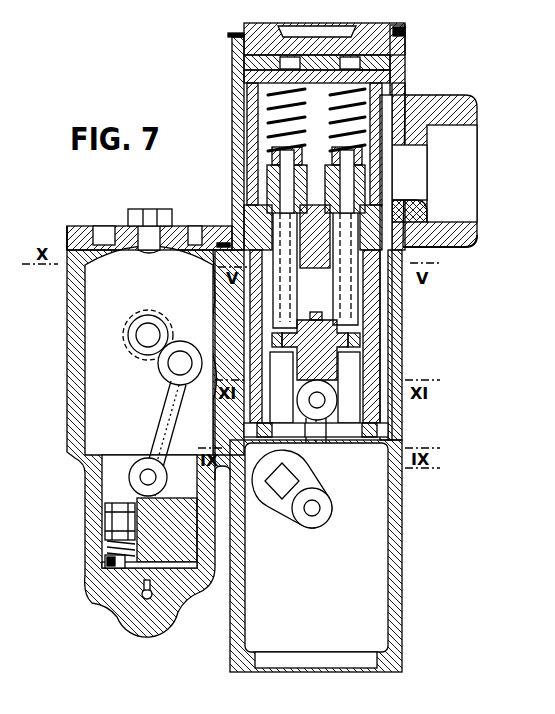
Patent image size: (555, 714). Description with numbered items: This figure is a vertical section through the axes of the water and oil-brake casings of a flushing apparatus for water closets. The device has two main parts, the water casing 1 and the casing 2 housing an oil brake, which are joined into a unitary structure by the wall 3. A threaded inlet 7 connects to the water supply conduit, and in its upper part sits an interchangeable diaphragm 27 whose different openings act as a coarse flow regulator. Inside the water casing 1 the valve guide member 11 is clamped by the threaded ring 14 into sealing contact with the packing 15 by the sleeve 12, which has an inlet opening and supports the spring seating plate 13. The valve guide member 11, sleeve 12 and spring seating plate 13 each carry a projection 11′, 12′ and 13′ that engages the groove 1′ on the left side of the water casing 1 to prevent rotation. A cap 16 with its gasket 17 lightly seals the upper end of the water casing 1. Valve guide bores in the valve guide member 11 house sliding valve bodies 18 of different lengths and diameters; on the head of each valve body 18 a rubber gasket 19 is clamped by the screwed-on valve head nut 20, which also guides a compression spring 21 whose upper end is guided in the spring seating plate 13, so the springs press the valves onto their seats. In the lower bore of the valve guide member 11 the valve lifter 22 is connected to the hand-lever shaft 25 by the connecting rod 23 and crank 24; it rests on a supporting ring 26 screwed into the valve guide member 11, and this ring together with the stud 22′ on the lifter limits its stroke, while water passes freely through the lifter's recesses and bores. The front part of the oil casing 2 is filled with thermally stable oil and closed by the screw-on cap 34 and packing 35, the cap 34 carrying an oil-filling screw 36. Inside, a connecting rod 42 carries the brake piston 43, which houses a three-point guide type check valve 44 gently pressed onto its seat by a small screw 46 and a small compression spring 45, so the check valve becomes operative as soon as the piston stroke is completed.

The water casing 1 is at (405, 290).
The groove 1′ is at (232, 35).
The casing housing an oil brake 2 is at (75, 409).
The wall 3 is at (216, 291).
The threaded inlet 7 is at (455, 100).
The valve guide member 11 is at (406, 216).
The projection of the valve guide member 11′ is at (224, 243).
The sleeve 12 is at (395, 97).
The projection of the sleeve 12′ is at (272, 84).
The spring seating plate 13 is at (382, 78).
The projection of the spring seating plate 13′ is at (262, 62).
The threaded ring 14 is at (382, 58).
The packing 15 is at (470, 228).
The cap 16 is at (401, 33).
The gasket 17 is at (406, 26).
The valve body 18 is at (268, 200).
The rubber gasket 19 is at (282, 185).
The valve head nut 20 is at (275, 150).
The compression spring 21 is at (278, 103).
The valve lifter 22 is at (322, 358).
The stud 22′ is at (316, 320).
The connecting rod 23 is at (318, 452).
The crank 24 is at (297, 466).
The shaft 25 is at (284, 489).
The supporting ring 26 is at (385, 431).
The interchangeable diaphragm 27 is at (426, 135).
The screw-on cap 34 is at (90, 234).
The packing 35 is at (67, 247).
The oil-filling screw 36 is at (138, 218).
The connecting rod 42 is at (166, 398).
The brake piston 43 is at (170, 510).
The check valve 44 is at (122, 530).
The small compression spring 45 is at (108, 548).
The small screw 46 is at (112, 563).